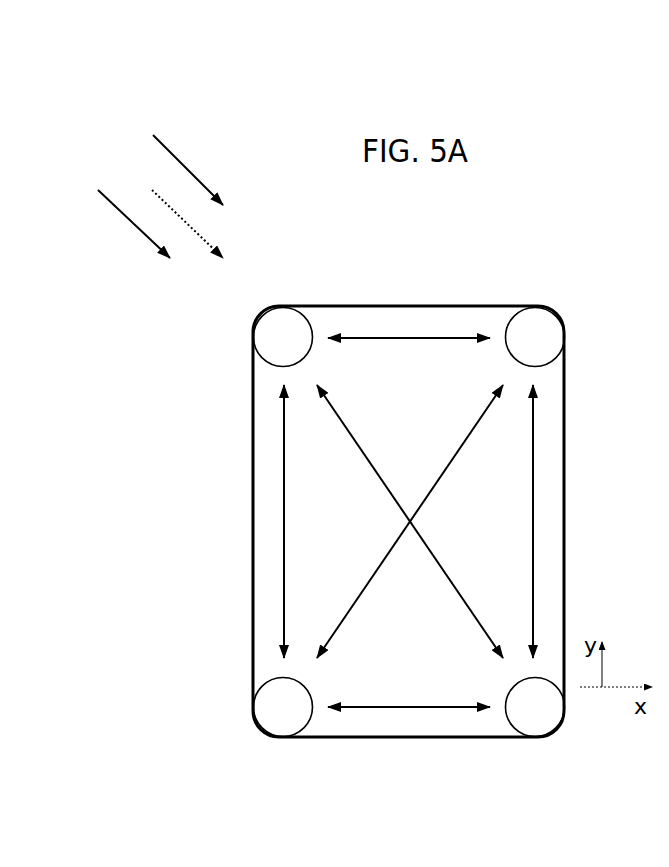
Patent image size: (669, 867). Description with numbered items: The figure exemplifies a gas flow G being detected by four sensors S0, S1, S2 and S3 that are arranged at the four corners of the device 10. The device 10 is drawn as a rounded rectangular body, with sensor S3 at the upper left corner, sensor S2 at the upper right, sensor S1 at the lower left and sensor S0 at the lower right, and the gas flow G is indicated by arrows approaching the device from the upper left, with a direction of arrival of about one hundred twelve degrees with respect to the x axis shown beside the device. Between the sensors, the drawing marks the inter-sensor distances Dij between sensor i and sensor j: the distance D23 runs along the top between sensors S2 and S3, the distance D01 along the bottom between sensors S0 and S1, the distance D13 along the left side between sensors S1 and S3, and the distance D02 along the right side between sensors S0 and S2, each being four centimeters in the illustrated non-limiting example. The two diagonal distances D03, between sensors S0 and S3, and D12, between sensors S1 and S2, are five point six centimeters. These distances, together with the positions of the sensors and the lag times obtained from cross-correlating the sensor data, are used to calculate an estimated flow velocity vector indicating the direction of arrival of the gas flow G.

The device 10 is at (564, 242).
The gas flow G is at (160, 196).
The sensor S0 is at (535, 718).
The sensor S1 is at (282, 722).
The sensor S2 is at (545, 332).
The sensor S3 is at (280, 333).
The distance between sensors S0 and S1 D01 is at (402, 710).
The distance between sensors S0 and S2 D02 is at (533, 510).
The distance between sensors S0 and S3 D03 is at (397, 444).
The distance between sensors S1 and S2 D12 is at (380, 568).
The distance between sensors S1 and S3 D13 is at (284, 511).
The distance between sensors S2 and S3 D23 is at (394, 335).